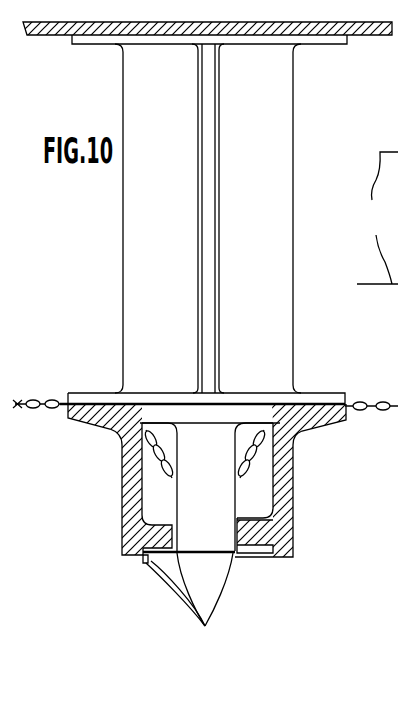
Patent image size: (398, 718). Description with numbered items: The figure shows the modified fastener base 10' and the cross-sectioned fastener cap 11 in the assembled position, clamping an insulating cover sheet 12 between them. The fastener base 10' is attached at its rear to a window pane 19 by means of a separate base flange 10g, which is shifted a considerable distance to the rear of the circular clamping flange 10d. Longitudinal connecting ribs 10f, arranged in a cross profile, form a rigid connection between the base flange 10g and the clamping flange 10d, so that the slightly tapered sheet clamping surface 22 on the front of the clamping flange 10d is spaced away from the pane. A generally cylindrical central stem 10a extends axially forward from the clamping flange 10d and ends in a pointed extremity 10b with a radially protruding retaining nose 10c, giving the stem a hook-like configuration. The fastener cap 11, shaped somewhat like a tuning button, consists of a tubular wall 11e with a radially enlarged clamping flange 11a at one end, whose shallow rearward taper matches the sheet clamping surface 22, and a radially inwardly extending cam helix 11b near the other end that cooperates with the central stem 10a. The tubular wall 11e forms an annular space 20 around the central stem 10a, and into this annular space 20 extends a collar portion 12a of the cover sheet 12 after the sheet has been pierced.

The modified fastener base 10' is at (246, 218).
The base flange 10g is at (230, 39).
The window pane 19 is at (320, 33).
The longitudinal connecting ribs 10f is at (180, 190).
The cover sheet 12 is at (377, 218).
The collar portion 12a is at (35, 398).
The sheet clamping surface 22 is at (157, 410).
The clamping flange 10d is at (247, 398).
The fastener cap 11 is at (121, 459).
The clamping flange of fastener cap 11a is at (293, 427).
The central stem 10a is at (190, 482).
The annular space 20 is at (255, 508).
The tubular wall 11e is at (130, 508).
The cam helix 11b is at (256, 540).
The retaining nose 10c is at (182, 578).
The pointed extremity 10b is at (205, 590).